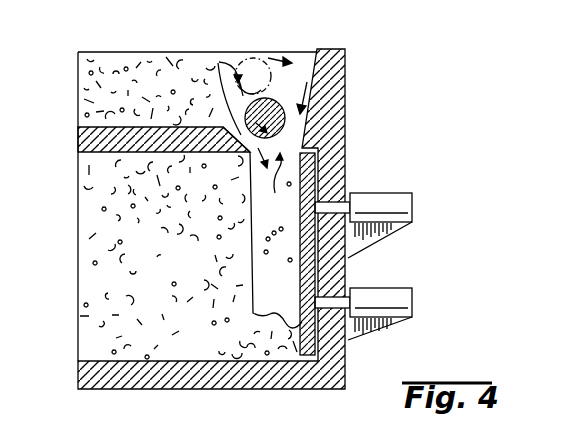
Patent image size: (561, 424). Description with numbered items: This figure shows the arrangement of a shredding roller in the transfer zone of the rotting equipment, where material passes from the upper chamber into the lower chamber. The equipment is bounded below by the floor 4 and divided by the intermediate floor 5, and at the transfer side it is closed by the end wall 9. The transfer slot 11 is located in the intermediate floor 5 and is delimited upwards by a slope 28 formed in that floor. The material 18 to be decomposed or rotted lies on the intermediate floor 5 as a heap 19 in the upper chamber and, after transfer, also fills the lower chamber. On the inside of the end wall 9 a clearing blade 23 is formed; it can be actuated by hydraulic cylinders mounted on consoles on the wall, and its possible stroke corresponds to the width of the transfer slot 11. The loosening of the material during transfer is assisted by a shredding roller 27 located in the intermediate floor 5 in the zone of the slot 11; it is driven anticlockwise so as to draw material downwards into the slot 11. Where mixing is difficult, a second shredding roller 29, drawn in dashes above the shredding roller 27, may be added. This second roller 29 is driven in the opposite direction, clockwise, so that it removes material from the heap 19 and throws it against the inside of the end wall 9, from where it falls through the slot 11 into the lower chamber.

The floor 4 is at (79, 378).
The intermediate floor 5 is at (79, 143).
The end wall on the transfer side 9 is at (337, 163).
The transfer slot 11 is at (276, 238).
The material 18 is at (83, 97).
The heap 19 is at (219, 62).
The clearing blade 23 is at (305, 283).
The shredding roller 27 is at (246, 109).
The slope 28 is at (234, 144).
The second shredding roller 29 is at (232, 77).